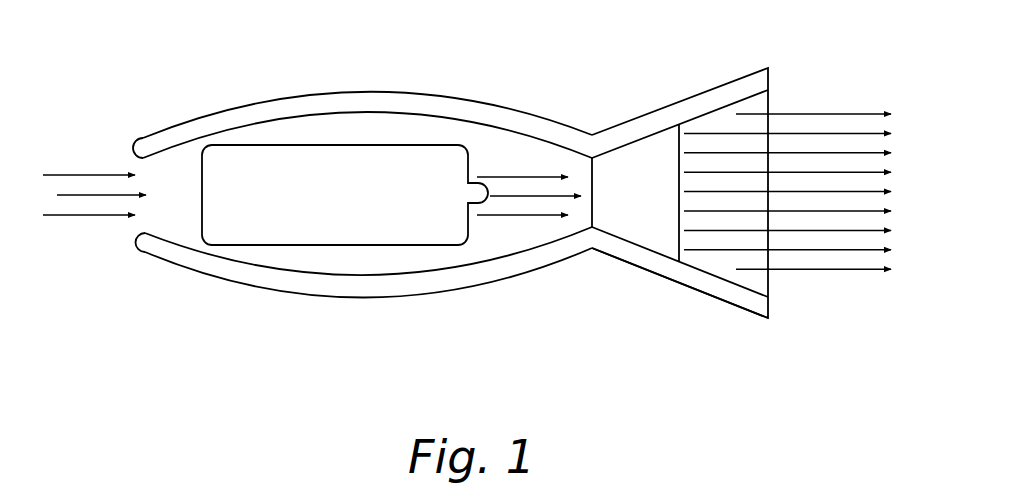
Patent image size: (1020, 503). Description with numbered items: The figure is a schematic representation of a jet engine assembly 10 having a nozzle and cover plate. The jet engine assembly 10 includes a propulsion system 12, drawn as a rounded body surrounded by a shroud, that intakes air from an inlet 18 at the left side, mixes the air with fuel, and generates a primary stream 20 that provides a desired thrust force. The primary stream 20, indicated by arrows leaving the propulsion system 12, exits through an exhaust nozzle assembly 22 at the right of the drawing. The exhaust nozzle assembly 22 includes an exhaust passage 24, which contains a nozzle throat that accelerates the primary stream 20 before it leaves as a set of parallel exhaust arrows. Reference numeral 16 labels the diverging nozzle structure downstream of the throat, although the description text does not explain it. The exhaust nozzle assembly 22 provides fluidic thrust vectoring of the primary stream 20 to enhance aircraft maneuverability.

The jet engine assembly 10 is at (512, 76).
The propulsion system 12 is at (337, 212).
The nozzle 16 is at (722, 167).
The inlet 18 is at (143, 223).
The primary stream 20 is at (535, 197).
The exhaust nozzle assembly 22 is at (737, 297).
The exhaust passage 24 is at (604, 180).